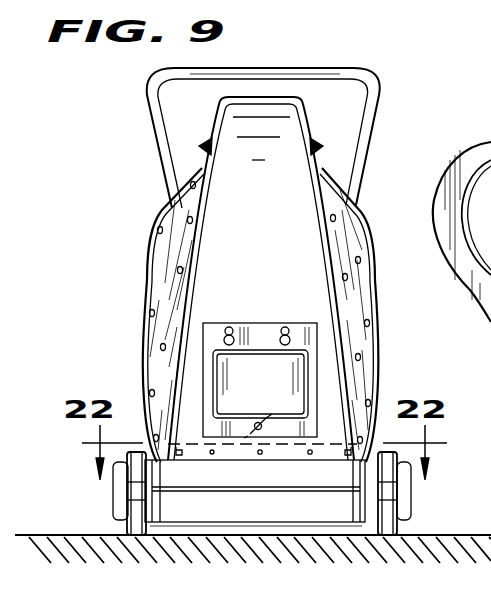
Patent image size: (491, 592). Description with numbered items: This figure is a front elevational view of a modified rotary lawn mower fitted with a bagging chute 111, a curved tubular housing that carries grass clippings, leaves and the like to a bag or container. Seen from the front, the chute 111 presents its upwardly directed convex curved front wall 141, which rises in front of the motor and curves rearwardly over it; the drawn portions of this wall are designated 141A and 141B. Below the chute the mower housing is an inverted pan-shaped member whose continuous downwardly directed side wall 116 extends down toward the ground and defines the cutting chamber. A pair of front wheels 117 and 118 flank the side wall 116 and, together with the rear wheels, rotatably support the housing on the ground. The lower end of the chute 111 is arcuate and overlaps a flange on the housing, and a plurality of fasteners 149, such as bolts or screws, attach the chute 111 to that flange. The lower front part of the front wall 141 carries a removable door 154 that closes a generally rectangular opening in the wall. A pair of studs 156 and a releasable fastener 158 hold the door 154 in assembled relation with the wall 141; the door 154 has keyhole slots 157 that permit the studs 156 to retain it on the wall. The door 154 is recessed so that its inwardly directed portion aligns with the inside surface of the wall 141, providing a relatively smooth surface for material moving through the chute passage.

The bagging chute 111 is at (308, 192).
The side wall 116 is at (332, 497).
The front wheel 117 is at (135, 490).
The front wheel 118 is at (392, 492).
The front wall 141 is at (232, 240).
The left flange portion 141A is at (183, 287).
The right flange portion 141B is at (340, 297).
The fasteners 149 is at (310, 455).
The removable door 154 is at (258, 333).
The studs 156 is at (288, 333).
The keyhole slots 157 is at (290, 360).
The releasable fastener 158 is at (282, 417).